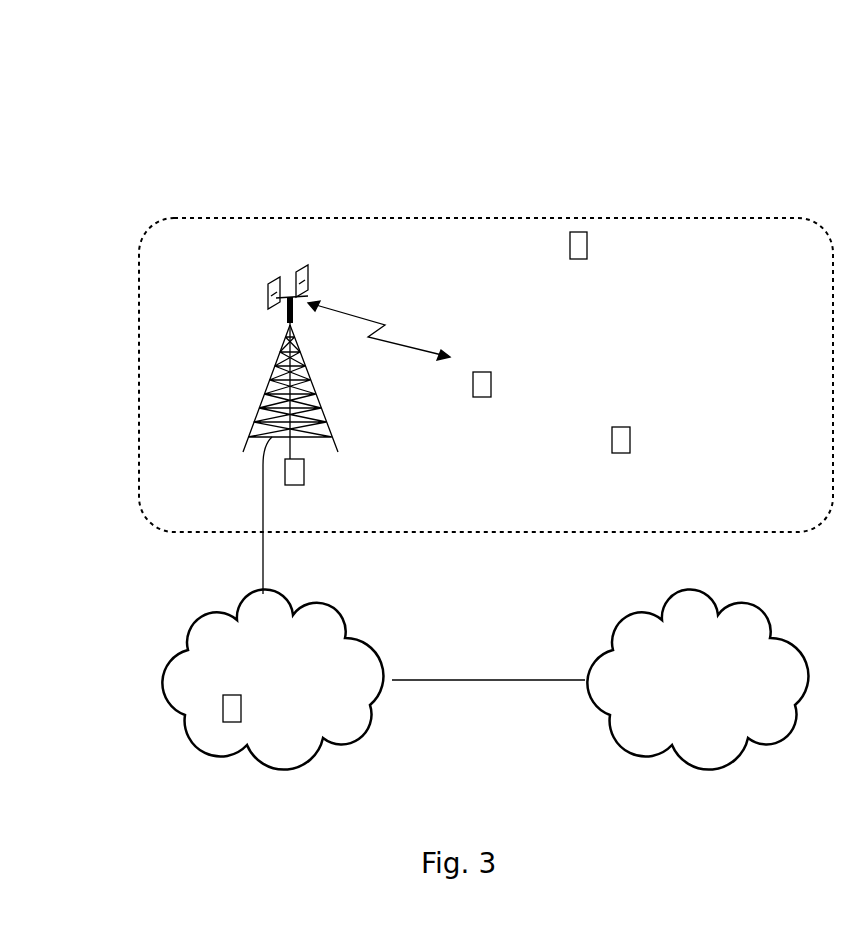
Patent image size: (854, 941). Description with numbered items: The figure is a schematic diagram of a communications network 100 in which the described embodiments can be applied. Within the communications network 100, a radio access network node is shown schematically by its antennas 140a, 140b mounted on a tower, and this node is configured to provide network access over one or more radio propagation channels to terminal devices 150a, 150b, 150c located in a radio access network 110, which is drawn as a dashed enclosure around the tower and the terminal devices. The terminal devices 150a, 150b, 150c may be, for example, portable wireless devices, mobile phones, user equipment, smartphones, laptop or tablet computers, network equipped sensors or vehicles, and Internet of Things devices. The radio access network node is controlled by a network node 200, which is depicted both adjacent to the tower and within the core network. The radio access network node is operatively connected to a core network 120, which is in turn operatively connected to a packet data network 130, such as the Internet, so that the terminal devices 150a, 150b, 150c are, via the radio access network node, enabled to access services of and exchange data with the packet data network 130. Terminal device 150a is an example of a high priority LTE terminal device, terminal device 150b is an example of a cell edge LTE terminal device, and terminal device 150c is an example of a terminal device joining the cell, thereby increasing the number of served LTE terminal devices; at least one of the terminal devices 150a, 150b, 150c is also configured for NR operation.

The communications network 100 is at (232, 143).
The radio access network 110 is at (139, 362).
The core network 120 is at (272, 679).
The packet data network 130 is at (697, 679).
The antenna 140a is at (268, 297).
The antenna 140b is at (310, 285).
The terminal device 150a is at (492, 385).
The terminal device 150b is at (588, 247).
The terminal device 150c is at (631, 441).
The network node 200 is at (305, 472).